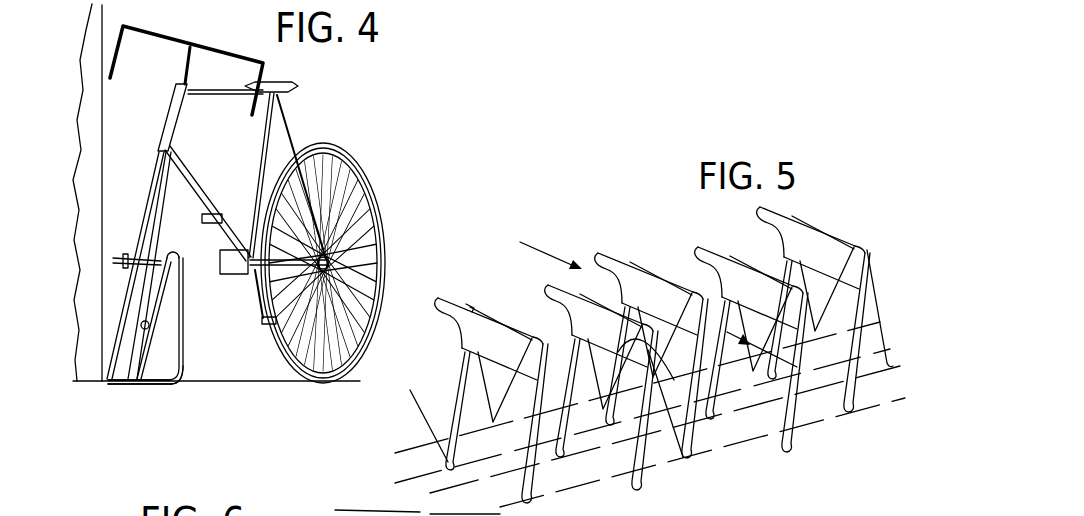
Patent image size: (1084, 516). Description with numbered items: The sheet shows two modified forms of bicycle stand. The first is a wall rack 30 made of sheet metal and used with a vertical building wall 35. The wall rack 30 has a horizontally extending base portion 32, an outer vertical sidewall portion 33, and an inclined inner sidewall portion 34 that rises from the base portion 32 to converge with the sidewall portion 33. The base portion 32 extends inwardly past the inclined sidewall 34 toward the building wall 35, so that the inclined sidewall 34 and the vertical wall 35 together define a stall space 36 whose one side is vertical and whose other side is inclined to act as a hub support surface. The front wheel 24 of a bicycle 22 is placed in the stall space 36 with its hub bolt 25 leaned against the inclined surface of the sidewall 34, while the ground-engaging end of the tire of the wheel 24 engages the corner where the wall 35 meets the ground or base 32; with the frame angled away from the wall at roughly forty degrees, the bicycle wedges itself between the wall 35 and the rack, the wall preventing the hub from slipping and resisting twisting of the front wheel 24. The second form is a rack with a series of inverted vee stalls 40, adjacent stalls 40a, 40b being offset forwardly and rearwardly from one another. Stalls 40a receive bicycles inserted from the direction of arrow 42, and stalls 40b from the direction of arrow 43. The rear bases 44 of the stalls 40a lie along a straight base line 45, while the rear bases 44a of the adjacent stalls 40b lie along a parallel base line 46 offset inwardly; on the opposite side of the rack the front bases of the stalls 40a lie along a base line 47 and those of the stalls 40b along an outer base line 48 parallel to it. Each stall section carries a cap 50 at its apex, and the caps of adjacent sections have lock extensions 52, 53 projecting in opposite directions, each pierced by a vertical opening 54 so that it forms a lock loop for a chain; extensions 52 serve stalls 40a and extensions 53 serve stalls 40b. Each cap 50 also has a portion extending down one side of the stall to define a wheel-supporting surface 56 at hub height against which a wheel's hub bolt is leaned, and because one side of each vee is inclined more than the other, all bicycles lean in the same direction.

In FIG. 4, the bicycle 22 is at (213, 97).
In FIG. 4, the front wheel 24 is at (143, 220).
In FIG. 4, the hub bolt 25 is at (158, 258).
In FIG. 4, the wall rack 30 is at (168, 338).
In FIG. 4, the base portion 32 is at (127, 383).
In FIG. 4, the outer vertical sidewall portion 33 is at (181, 373).
In FIG. 4, the inclined inner sidewall portion 34 is at (149, 329).
In FIG. 4, the vertical building wall 35 is at (103, 137).
In FIG. 4, the stall space 36 is at (104, 306).
In FIG. 5, the vee stalls 40 is at (643, 375).
In FIG. 5, the vee stalls 40a is at (660, 328).
In FIG. 5, the vee stalls 40b is at (722, 306).
In FIG. 5, the arrow 42 is at (550, 252).
In FIG. 5, the arrow 43 is at (795, 372).
In FIG. 5, the rear bases 44 is at (682, 458).
In FIG. 5, the rear bases 44a is at (567, 455).
In FIG. 5, the base line 45 is at (607, 480).
In FIG. 5, the base line 46 is at (632, 440).
In FIG. 5, the base line 47 is at (398, 483).
In FIG. 5, the outer base line 48 is at (407, 448).
In FIG. 5, the cap 50 is at (503, 320).
In FIG. 5, the lock extension 52 is at (437, 298).
In FIG. 5, the lock extension 53 is at (640, 358).
In FIG. 5, the vertical opening 54 is at (447, 297).
In FIG. 5, the wheel-supporting surface 56 is at (487, 335).